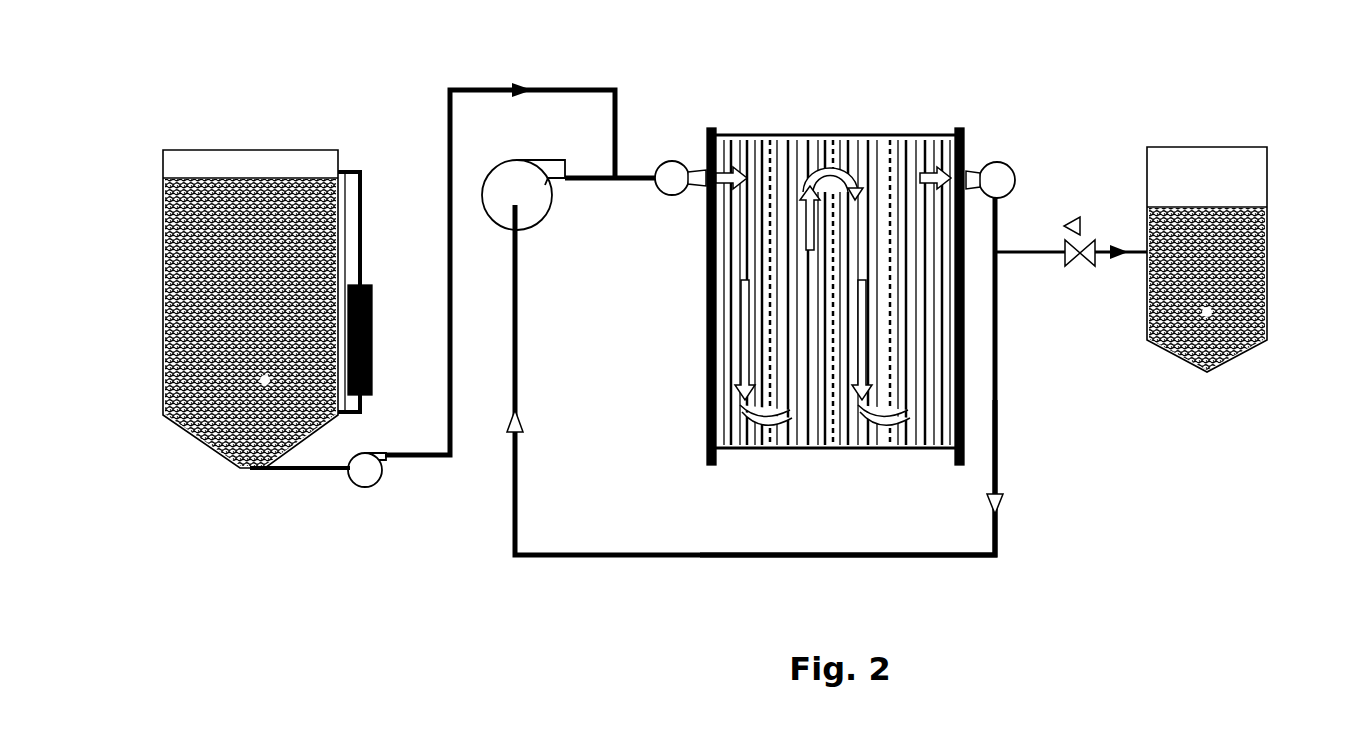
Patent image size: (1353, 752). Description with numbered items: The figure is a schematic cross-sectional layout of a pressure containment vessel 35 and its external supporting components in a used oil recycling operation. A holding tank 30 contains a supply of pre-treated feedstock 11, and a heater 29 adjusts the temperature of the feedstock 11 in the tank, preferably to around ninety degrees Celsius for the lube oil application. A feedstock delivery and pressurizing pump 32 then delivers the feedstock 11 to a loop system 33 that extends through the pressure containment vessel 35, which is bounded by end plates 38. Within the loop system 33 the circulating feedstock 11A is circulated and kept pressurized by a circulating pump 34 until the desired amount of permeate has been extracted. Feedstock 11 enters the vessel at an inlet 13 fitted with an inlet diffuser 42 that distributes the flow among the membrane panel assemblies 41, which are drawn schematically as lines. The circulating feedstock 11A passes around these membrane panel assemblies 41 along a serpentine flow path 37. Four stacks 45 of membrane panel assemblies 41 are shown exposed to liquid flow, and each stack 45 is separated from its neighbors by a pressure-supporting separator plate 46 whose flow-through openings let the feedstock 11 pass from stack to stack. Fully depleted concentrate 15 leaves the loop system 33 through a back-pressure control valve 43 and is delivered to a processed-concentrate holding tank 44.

The feedstock 11 is at (262, 384).
The circulating feedstock 11A is at (1003, 510).
The inlet 13 is at (700, 172).
The concentrate 15 is at (1282, 390).
The heater 29 is at (375, 325).
The holding tank 30 is at (250, 148).
The feedstock delivery and pressurizing pump 32 is at (352, 481).
The loop system 33 is at (512, 447).
The circulating pump 34 is at (532, 228).
The pressure containment vessel 35 is at (834, 297).
The serpentine flow path 37 is at (740, 300).
The end plates 38 is at (707, 420).
The membrane panel assemblies 41 is at (730, 245).
The inlet diffuser 42 is at (655, 192).
The back-pressure control valve 43 is at (1062, 270).
The holding tank 44 is at (1150, 340).
The stacks 45 is at (740, 450).
The separator plate 46 is at (783, 450).